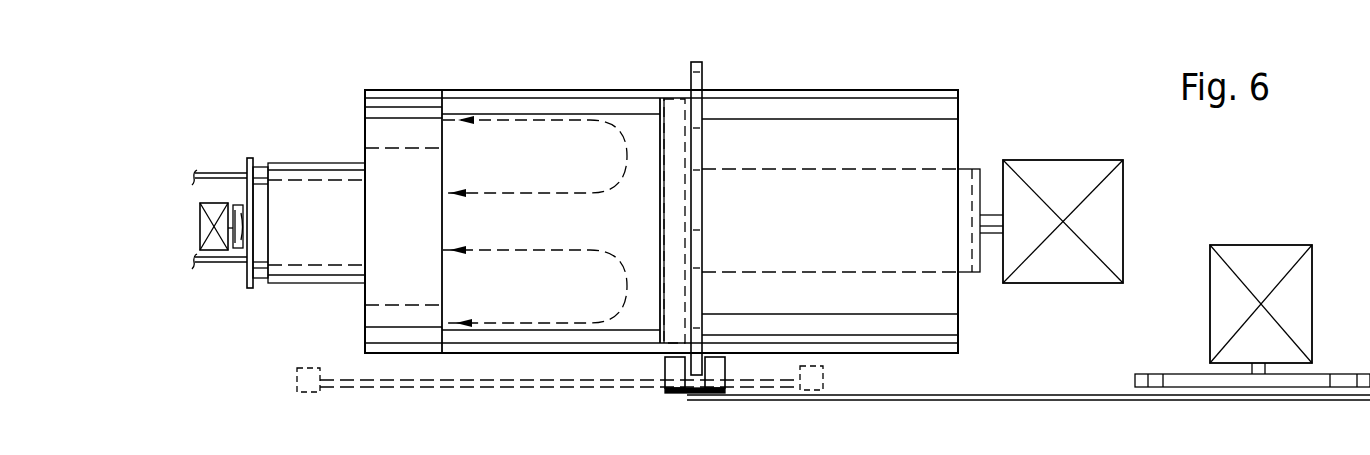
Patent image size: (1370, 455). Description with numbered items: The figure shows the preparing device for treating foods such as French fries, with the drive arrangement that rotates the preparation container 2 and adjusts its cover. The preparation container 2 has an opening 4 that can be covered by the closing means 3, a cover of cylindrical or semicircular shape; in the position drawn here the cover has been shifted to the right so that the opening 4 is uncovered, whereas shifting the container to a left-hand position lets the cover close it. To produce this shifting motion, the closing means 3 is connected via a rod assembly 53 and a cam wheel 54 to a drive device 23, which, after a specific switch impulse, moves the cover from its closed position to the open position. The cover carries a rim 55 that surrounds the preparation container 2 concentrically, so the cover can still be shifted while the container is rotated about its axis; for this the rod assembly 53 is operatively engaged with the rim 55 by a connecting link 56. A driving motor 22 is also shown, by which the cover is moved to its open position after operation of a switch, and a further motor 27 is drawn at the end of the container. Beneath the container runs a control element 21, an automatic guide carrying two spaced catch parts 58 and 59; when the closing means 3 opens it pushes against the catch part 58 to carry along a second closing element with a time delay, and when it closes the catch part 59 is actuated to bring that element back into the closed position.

The preparation container 2 is at (808, 78).
The closing means 3 is at (876, 128).
The opening 4 is at (550, 85).
The control element 21 is at (530, 382).
The driving motor 22 is at (1250, 252).
The drive device 23 is at (1177, 282).
The drive motor 27 is at (1057, 167).
The rod assembly 53 is at (1005, 393).
The cam wheel 54 is at (1175, 378).
The rim 55 is at (704, 72).
The connecting link 56 is at (675, 375).
The catch part 58 is at (297, 380).
The catch part 59 is at (825, 375).